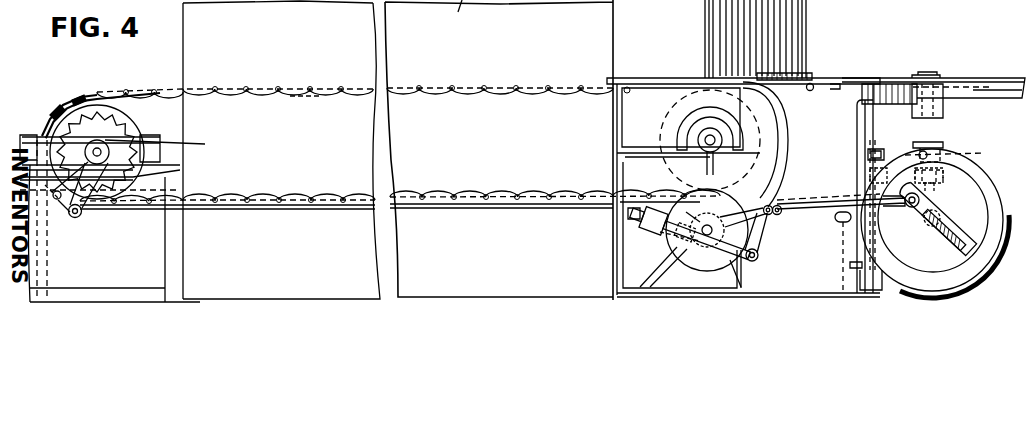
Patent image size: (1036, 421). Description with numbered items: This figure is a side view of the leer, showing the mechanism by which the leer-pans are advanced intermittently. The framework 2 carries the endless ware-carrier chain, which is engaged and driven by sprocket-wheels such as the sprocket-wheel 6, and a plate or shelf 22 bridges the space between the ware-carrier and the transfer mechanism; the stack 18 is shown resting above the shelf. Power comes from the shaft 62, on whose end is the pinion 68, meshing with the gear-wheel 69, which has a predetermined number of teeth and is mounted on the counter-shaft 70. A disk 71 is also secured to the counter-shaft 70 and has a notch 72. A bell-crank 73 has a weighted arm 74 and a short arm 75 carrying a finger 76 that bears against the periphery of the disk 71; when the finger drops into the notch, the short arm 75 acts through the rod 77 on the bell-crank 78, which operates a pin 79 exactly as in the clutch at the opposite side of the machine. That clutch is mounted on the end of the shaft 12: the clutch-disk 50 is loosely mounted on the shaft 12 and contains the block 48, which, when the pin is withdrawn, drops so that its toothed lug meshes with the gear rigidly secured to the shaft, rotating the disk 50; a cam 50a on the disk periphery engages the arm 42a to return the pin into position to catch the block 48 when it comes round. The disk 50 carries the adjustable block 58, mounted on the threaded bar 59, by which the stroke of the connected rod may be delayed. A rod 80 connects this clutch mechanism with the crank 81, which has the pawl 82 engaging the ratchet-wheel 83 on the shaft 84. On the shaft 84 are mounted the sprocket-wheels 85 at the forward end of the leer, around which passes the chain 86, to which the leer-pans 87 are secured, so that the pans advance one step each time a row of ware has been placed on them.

The framework 2 is at (998, 96).
The sprocket-wheel 6 is at (975, 92).
The shaft 12 is at (936, 211).
The stack of sheets 18 is at (788, 23).
The plate or shelf 22 is at (828, 78).
The arm 42a is at (850, 266).
The block 48 is at (938, 141).
The clutch-disk 50 is at (982, 178).
The cam 50a is at (961, 256).
The adjustable block 58 is at (912, 208).
The threaded bar 59 is at (950, 232).
The shaft 62 is at (673, 230).
The pinion 68 is at (687, 237).
The gear-wheel 69 is at (683, 254).
The counter-shaft 70 is at (707, 236).
The disk 71 is at (686, 212).
The notch 72 is at (719, 193).
The bell-crank 73 is at (759, 251).
The weighted arm 74 is at (632, 219).
The short arm 75 is at (770, 218).
The finger 76 is at (748, 206).
The rod 77 is at (843, 222).
The bell-crank 78 is at (868, 153).
The pin 79 is at (957, 153).
The rod 80 is at (268, 210).
The crank 81 is at (150, 166).
The pawl 82 is at (64, 198).
The ratchet-wheel 83 is at (167, 144).
The shaft 84 is at (135, 137).
The sprocket-wheels 85 is at (103, 143).
The chain 86 is at (304, 94).
The leer-pans 87 is at (272, 88).